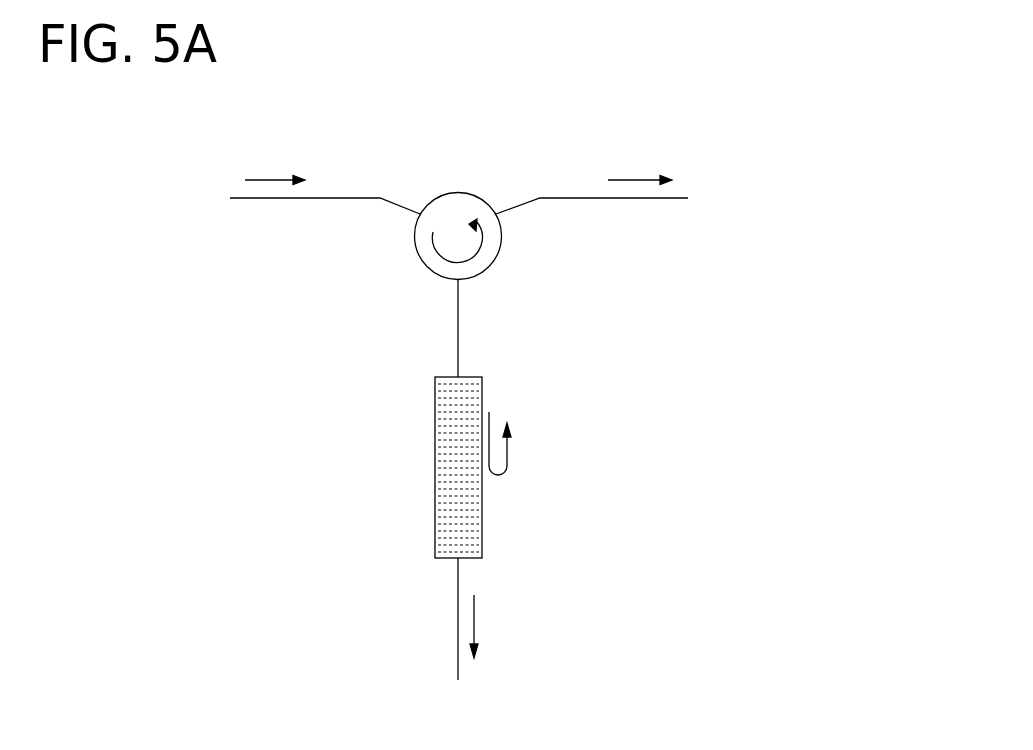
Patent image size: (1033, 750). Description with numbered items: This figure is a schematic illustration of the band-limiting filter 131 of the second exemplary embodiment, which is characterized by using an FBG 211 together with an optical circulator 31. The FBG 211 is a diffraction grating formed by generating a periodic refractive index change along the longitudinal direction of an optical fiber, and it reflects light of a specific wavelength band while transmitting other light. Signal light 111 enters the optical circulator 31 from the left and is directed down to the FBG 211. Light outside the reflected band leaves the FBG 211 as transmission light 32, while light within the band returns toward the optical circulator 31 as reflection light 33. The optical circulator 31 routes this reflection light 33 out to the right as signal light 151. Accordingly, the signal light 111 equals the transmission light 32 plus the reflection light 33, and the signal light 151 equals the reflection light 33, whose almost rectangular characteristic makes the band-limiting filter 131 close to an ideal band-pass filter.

The band-limiting filter 131 is at (664, 120).
The signal light 111 is at (268, 178).
The signal light 151 is at (628, 178).
The optical circulator 31 is at (460, 192).
The FBG 211 is at (435, 505).
The reflection light 33 is at (510, 452).
The transmission light 32 is at (476, 620).